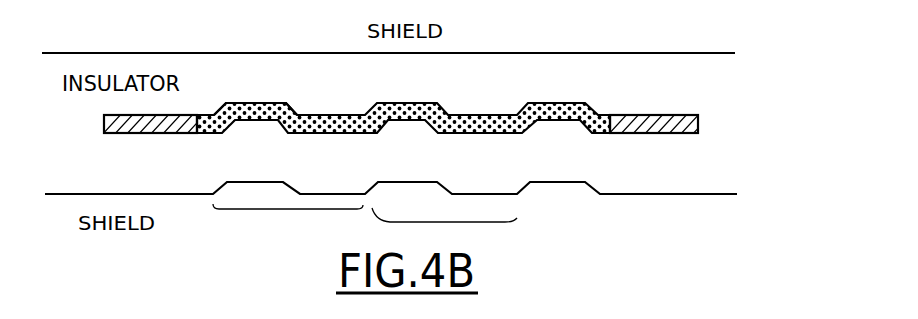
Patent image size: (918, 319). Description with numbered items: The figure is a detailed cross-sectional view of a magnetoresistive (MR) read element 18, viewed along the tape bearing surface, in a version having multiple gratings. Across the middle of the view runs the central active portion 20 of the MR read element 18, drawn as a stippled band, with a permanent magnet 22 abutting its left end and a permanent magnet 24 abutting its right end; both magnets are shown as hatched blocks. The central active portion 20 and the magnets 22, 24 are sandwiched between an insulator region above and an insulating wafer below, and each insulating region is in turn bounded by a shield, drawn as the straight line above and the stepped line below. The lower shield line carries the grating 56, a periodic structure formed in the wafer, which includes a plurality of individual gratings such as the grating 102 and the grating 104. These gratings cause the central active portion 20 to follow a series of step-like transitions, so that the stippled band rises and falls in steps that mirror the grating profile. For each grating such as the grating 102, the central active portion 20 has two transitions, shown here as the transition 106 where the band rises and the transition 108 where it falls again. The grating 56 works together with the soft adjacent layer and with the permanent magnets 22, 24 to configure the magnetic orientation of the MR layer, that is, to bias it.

The MR read element 18 is at (671, 27).
The central active portion 20 is at (447, 88).
The permanent magnet 22 is at (152, 134).
The permanent magnet 24 is at (671, 118).
The grating 56 is at (485, 194).
The grating 102 is at (277, 209).
The grating 104 is at (450, 222).
The transition 106 is at (225, 105).
The transition 108 is at (291, 110).